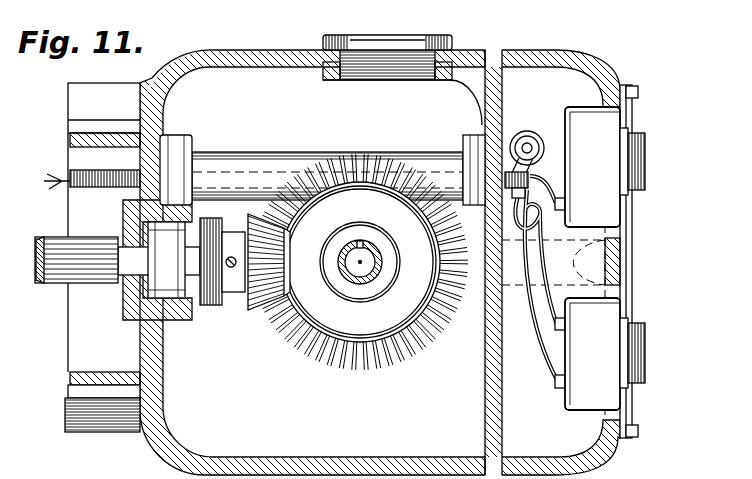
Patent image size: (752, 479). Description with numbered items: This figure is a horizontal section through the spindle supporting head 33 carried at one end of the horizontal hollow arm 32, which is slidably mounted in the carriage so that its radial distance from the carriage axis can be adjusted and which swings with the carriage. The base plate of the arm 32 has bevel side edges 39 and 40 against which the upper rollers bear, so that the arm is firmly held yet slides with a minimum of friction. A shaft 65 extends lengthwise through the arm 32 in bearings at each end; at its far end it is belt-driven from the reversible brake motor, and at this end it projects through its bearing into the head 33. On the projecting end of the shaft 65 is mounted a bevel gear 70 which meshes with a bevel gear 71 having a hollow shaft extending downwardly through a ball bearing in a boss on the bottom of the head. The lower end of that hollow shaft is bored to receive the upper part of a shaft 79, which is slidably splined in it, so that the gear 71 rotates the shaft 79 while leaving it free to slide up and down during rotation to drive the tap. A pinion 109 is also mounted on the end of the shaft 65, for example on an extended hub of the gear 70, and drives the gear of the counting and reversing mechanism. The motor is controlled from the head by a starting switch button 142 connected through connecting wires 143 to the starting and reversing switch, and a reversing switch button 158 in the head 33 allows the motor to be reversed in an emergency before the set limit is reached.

The spindle supporting head 33 is at (162, 76).
The bevel side edge 39 is at (78, 99).
The horizontal hollow arm 32 is at (72, 142).
The bevel side edge 40 is at (68, 410).
The shaft 65 is at (45, 237).
The pinion 109 is at (208, 306).
The bevel gear 70 is at (256, 306).
The bevel gear 71 is at (292, 344).
The shaft 79 is at (358, 285).
The connecting wires 143 is at (541, 140).
The starting switch button 142 is at (647, 168).
The reversing switch button 158 is at (648, 355).